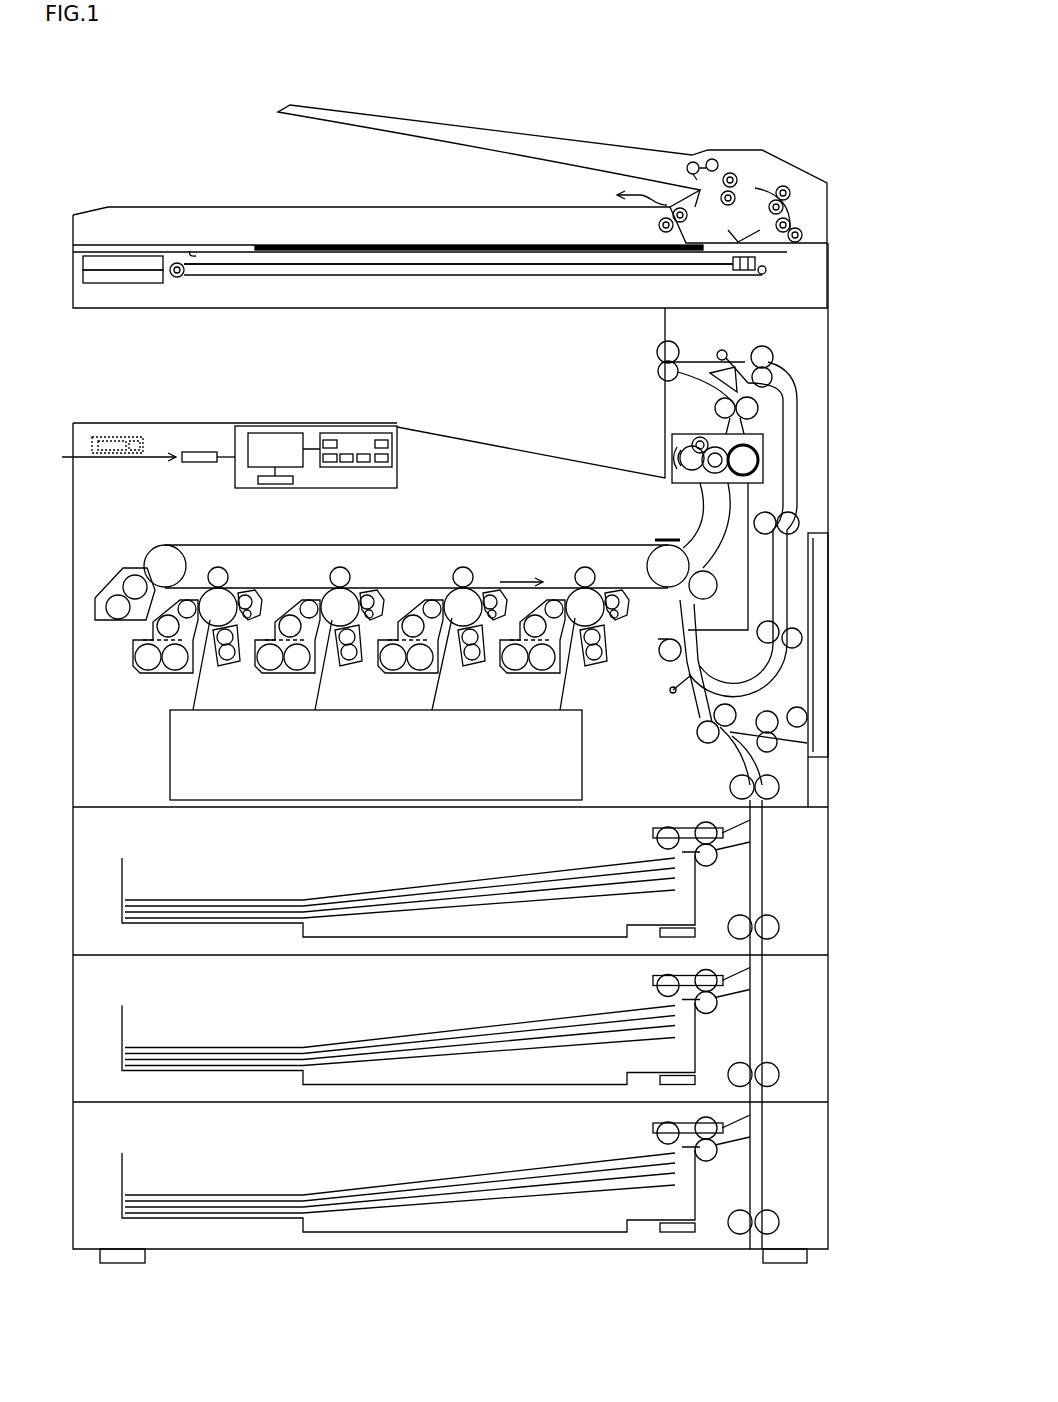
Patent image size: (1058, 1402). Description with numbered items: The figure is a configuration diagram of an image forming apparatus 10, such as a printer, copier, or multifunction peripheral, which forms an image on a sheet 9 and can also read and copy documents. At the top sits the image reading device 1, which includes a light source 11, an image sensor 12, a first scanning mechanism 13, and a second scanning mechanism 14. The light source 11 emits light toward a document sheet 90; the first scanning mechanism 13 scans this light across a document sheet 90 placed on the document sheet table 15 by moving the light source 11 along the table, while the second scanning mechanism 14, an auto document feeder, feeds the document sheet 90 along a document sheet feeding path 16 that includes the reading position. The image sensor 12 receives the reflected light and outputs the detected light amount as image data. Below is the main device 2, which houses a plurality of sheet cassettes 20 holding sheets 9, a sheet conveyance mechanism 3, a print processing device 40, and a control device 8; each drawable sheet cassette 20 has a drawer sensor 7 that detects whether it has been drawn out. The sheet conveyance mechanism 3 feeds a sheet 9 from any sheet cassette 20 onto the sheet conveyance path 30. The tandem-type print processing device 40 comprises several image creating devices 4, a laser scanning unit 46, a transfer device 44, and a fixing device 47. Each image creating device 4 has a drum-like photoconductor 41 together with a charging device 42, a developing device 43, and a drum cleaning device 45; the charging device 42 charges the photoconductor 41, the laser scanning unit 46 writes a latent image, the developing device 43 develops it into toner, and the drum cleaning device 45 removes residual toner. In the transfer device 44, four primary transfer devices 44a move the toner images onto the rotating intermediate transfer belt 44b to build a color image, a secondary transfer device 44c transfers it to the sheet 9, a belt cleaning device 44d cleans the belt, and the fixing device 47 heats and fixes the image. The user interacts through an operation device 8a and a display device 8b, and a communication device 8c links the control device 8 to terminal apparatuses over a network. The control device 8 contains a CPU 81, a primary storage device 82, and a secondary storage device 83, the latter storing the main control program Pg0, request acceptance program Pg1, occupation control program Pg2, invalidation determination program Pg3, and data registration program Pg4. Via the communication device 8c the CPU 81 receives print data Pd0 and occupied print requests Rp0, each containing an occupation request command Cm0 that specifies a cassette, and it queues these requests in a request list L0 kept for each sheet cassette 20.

The image forming apparatus 10 is at (105, 112).
The image reading device 1 is at (880, 212).
The second scanning mechanism 14 is at (812, 222).
The document sheet feeding path 16 is at (757, 190).
The document sheet table 15 is at (193, 253).
The document sheet 90 is at (423, 243).
The operation device 8a is at (83, 263).
The display device 8b is at (83, 276).
The light source 11 is at (760, 266).
The image sensor 12 is at (738, 271).
The first scanning mechanism 13 is at (712, 276).
The main device 2 is at (82, 406).
The occupied print request Rp0 is at (103, 437).
The print data Pd0 is at (117, 437).
The occupation request command Cm0 is at (133, 437).
The communication device 8c is at (201, 451).
The control device 8 is at (234, 465).
The CPU 81 is at (277, 433).
The primary storage device 82 is at (257, 482).
The secondary storage device 83 is at (352, 433).
The main control program Pg0 is at (327, 440).
The request acceptance program Pg1 is at (330, 467).
The occupation control program Pg2 is at (350, 467).
The invalidation determination program Pg3 is at (370, 467).
The data registration program Pg4 is at (392, 458).
The request list L0 is at (390, 440).
The print processing device 40 is at (120, 518).
The transfer device 44 is at (138, 562).
The primary transfer device 44a is at (217, 565).
The intermediate transfer belt 44b is at (640, 543).
The secondary transfer device 44c is at (717, 603).
The belt cleaning device 44d is at (100, 622).
The drum cleaning device 45 is at (262, 603).
The image creating device 4 is at (202, 574).
The photoconductor 41 is at (229, 626).
The charging device 42 is at (224, 630).
The developing device 43 is at (155, 677).
The laser scanning unit 46 is at (583, 766).
The fixing device 47 is at (763, 445).
The sheet conveyance path 30 is at (692, 712).
The sheet cassette 20 is at (120, 806).
The sheet 9 is at (447, 882).
The drawer sensor 7 is at (677, 940).
The sheet conveyance mechanism 3 is at (771, 1002).